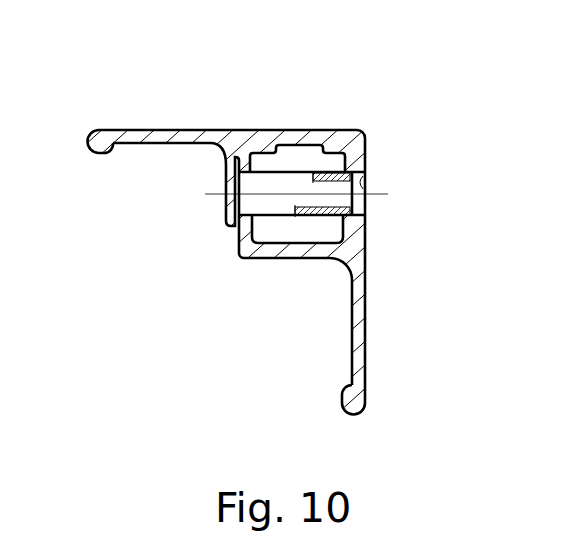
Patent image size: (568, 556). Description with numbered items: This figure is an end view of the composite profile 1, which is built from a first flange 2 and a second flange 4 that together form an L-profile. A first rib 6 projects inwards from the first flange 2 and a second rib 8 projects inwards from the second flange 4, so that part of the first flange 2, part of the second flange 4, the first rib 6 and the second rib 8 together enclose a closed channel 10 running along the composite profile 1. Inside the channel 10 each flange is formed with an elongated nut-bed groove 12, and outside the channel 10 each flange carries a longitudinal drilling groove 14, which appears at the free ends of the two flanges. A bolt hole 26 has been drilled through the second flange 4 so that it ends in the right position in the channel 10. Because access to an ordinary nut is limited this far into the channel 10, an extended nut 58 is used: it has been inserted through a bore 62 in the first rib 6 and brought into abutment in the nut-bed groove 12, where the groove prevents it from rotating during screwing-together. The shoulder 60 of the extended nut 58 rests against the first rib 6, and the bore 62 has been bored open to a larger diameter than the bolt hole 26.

The composite profile 1 is at (388, 123).
The first flange 2 is at (190, 135).
The second flange 4 is at (362, 298).
The first rib 6 is at (240, 236).
The second rib 8 is at (285, 248).
The channel 10 is at (262, 236).
The nut-bed groove 12 is at (300, 157).
The drilling groove 14 is at (157, 143).
The bolt hole 26 is at (363, 182).
The extended nut 58 is at (300, 210).
The shoulder 60 is at (236, 205).
The bore 62 is at (223, 183).